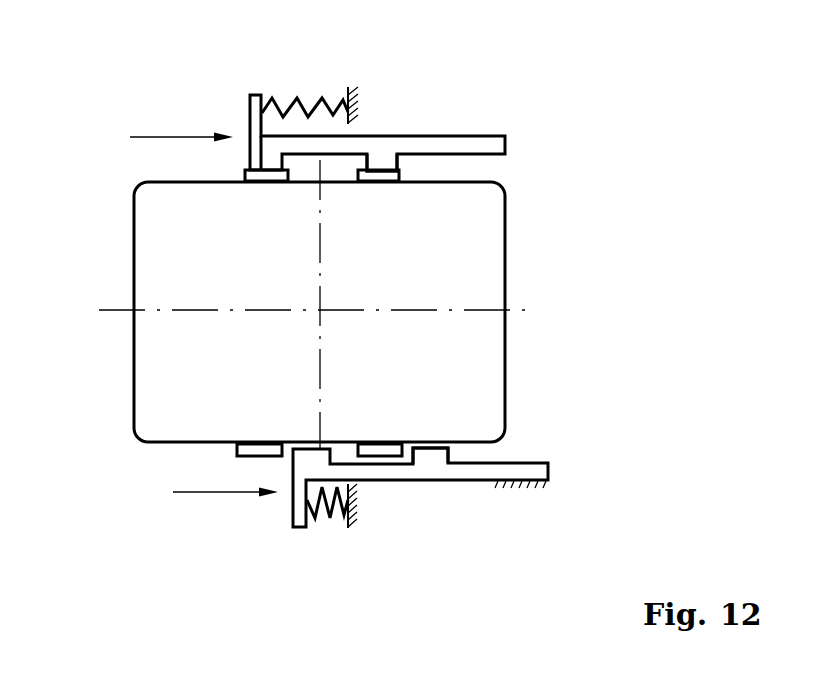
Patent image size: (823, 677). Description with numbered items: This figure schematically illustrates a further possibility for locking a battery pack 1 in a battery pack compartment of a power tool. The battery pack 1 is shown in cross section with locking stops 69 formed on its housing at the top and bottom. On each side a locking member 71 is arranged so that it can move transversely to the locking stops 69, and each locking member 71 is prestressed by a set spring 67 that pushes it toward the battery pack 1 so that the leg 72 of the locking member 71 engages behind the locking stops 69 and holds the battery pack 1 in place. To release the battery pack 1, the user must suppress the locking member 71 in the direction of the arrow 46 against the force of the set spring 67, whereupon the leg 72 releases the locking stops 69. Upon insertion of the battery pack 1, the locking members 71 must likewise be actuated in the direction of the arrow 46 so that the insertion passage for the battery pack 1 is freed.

The battery pack 1 is at (505, 183).
The arrow 46 is at (167, 135).
The set spring 67 is at (307, 98).
The locking stop 69 is at (243, 182).
The locking member 71 is at (470, 145).
The leg 72 is at (380, 165).